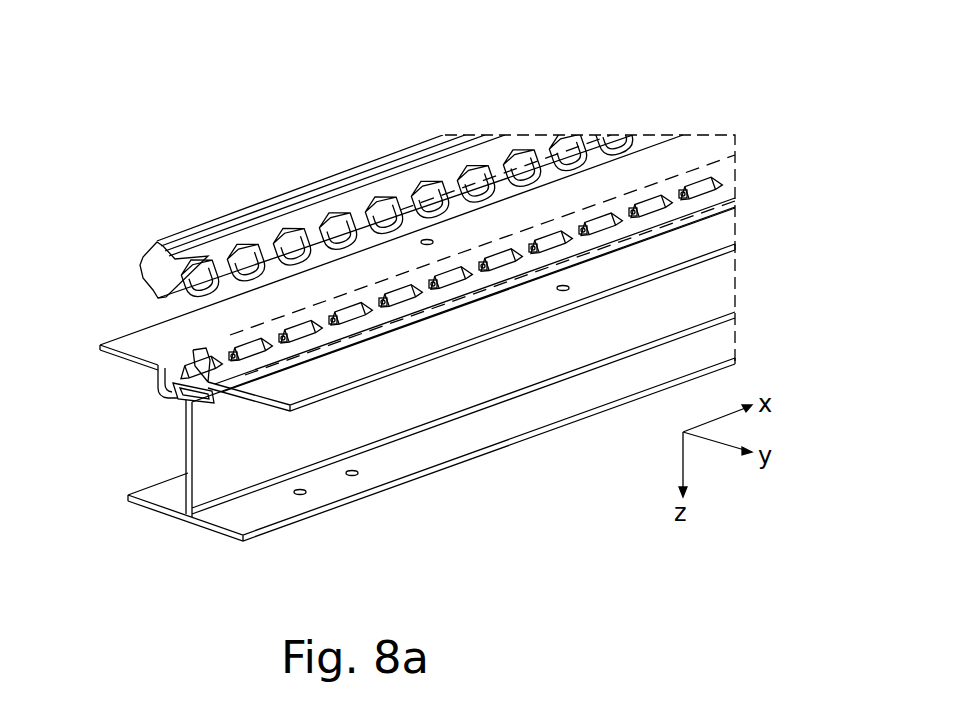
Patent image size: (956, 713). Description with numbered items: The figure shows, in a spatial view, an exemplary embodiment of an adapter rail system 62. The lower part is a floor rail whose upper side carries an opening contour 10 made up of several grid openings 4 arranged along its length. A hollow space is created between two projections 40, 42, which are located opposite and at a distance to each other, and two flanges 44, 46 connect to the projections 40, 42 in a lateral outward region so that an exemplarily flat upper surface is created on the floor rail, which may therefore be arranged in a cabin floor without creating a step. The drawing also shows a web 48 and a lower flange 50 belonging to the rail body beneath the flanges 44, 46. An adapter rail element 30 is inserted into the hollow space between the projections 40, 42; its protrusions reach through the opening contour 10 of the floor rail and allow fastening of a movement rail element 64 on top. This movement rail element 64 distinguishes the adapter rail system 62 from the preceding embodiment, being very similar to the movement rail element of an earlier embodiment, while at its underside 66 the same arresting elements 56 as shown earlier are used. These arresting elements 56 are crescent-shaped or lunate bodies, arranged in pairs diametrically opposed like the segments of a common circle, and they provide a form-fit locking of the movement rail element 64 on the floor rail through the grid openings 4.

The grid opening 4 is at (518, 250).
The opening contour 10 is at (595, 235).
The adapter rail element 30 is at (163, 398).
The projection 40 is at (338, 307).
The projection 42 is at (480, 300).
The flange 44 is at (135, 338).
The flange 46 is at (690, 242).
The web 48 is at (182, 455).
The flange 50 is at (255, 518).
The arresting element 56 is at (420, 145).
The adapter rail system 62 is at (540, 80).
The movement rail element 64 is at (157, 259).
The underside 66 is at (207, 258).